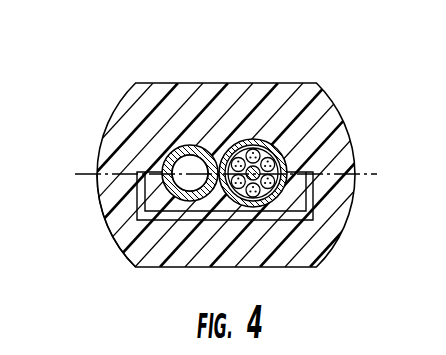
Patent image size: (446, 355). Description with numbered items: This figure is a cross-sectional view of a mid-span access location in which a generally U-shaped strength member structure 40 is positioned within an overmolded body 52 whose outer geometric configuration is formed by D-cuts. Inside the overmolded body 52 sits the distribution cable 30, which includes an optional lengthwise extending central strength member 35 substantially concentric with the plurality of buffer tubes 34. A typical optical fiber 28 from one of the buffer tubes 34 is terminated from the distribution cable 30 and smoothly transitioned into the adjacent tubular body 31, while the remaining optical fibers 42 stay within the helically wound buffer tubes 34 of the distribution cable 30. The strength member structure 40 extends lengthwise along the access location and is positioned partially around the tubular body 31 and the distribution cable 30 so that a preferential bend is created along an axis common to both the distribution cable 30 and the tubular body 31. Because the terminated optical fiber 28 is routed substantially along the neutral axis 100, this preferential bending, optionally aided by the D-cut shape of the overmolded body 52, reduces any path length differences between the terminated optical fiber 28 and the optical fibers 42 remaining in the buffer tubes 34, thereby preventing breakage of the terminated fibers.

The overmolded body 52 is at (133, 110).
The neutral axis 100 is at (83, 174).
The strength member structure 40 is at (137, 240).
The buffer tube 34 is at (276, 212).
The tubular body 31 is at (182, 149).
The optical fiber 28 is at (199, 156).
The distribution cable 30 is at (236, 125).
The central strength member 35 is at (268, 145).
The optical fibers 42 is at (270, 186).